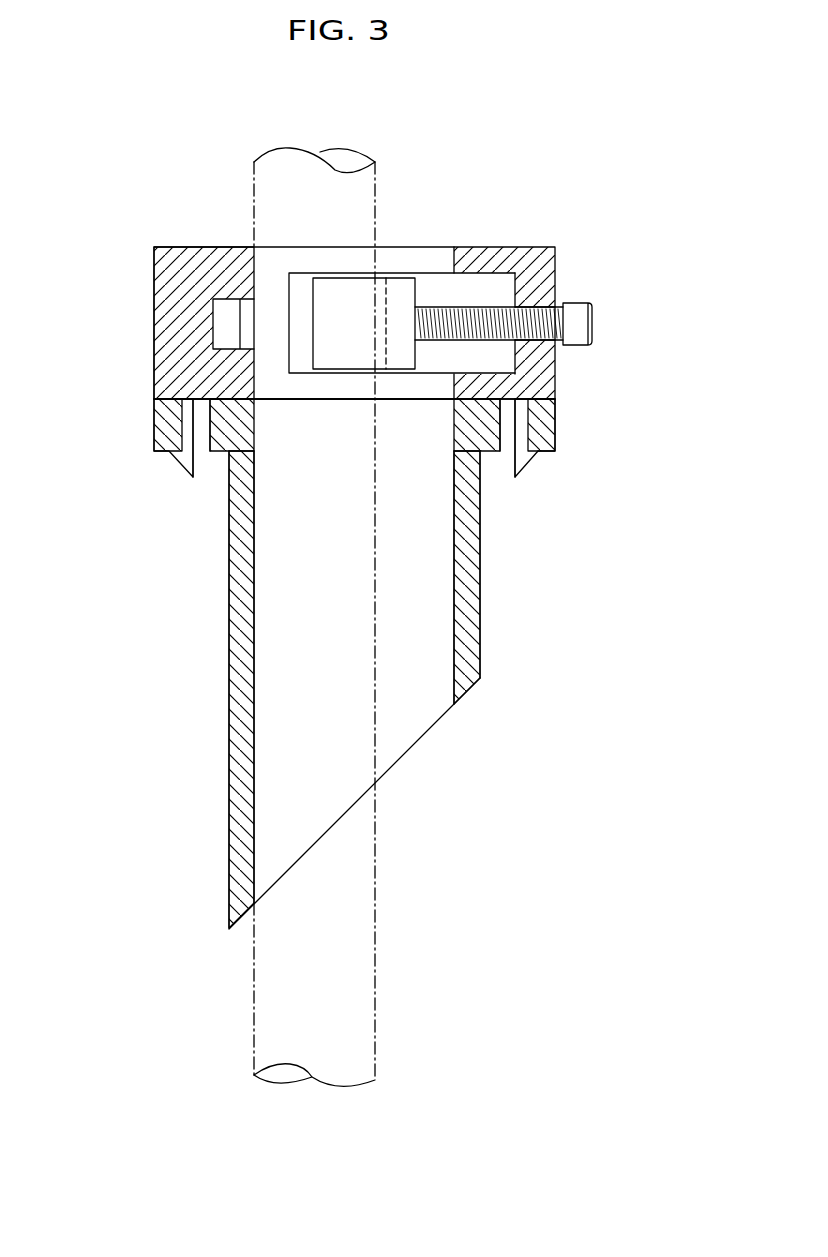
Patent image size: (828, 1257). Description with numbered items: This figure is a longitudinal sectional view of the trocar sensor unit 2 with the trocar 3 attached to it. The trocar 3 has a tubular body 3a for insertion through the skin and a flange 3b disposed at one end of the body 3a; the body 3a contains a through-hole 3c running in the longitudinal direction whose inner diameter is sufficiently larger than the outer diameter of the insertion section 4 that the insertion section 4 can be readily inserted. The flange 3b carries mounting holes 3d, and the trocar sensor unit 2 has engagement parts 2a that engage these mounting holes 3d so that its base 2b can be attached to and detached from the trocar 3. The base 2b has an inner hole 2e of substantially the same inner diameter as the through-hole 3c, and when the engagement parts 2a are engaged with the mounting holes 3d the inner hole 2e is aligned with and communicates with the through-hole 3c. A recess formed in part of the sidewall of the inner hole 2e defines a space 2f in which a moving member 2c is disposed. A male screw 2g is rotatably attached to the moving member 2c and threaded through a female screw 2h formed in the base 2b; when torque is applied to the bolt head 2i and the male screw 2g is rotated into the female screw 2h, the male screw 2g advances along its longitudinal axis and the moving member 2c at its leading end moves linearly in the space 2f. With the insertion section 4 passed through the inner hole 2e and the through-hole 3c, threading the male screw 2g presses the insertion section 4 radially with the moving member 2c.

The trocar sensor unit 2 is at (482, 176).
The engagement parts 2a is at (175, 468).
The base 2b is at (154, 310).
The moving member 2c is at (403, 273).
The inner hole 2e is at (256, 382).
The space 2f is at (440, 273).
The male screw 2g is at (500, 308).
The female screw 2h is at (555, 306).
The bolt head 2i is at (594, 322).
The trocar 3 is at (548, 550).
The body 3a is at (480, 590).
The flange 3b is at (557, 421).
The through-hole 3c is at (455, 622).
The mounting holes 3d is at (210, 436).
The insertion section 4 is at (375, 898).